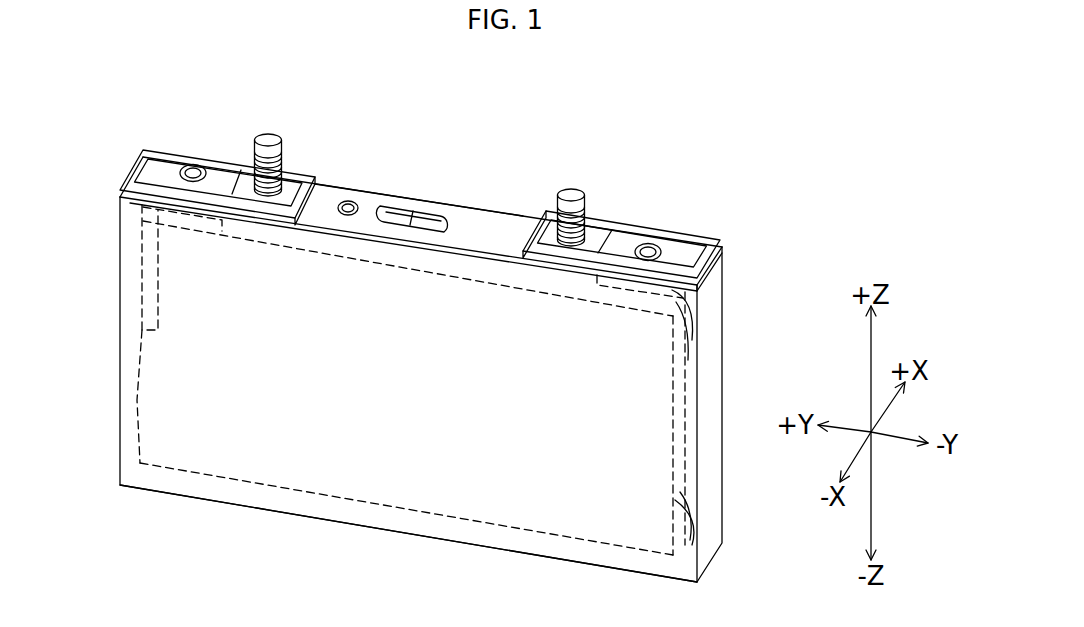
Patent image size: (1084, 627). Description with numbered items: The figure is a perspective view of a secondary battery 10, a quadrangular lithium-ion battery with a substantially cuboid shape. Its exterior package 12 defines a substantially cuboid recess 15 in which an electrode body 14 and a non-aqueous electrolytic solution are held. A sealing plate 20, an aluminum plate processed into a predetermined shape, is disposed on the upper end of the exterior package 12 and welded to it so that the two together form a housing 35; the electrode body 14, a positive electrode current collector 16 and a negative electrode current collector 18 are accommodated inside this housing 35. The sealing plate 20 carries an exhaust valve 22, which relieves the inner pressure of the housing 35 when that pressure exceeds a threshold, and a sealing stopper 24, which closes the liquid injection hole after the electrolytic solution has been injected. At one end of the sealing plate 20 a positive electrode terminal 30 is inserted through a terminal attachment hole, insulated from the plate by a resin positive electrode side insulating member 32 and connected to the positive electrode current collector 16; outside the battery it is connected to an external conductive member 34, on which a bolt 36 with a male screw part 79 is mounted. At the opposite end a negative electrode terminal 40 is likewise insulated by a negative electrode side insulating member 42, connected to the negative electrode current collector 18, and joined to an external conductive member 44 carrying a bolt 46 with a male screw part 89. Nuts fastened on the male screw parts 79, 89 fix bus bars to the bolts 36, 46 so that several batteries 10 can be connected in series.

The secondary battery 10 is at (725, 165).
The exterior package 12 is at (123, 488).
The electrode body 14 is at (455, 465).
The recess 15 is at (297, 465).
The positive electrode current collector 16 is at (145, 300).
The negative electrode current collector 18 is at (690, 388).
The sealing plate 20 is at (487, 232).
The exhaust valve 22 is at (432, 212).
The sealing stopper 24 is at (350, 200).
The positive electrode terminal 30 is at (190, 162).
The positive electrode side insulating member 32 is at (141, 156).
The external conductive member 34 is at (224, 178).
The housing 35 is at (392, 186).
The bolt 36 is at (268, 134).
The negative electrode terminal 40 is at (655, 243).
The negative electrode side insulating member 42 is at (700, 240).
The external conductive member 44 is at (622, 235).
The bolt 46 is at (572, 190).
The male screw part 79 is at (287, 167).
The male screw part 89 is at (590, 208).